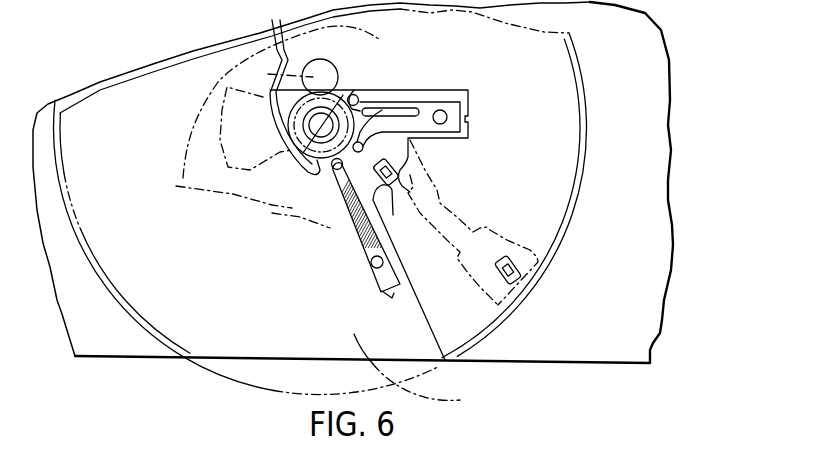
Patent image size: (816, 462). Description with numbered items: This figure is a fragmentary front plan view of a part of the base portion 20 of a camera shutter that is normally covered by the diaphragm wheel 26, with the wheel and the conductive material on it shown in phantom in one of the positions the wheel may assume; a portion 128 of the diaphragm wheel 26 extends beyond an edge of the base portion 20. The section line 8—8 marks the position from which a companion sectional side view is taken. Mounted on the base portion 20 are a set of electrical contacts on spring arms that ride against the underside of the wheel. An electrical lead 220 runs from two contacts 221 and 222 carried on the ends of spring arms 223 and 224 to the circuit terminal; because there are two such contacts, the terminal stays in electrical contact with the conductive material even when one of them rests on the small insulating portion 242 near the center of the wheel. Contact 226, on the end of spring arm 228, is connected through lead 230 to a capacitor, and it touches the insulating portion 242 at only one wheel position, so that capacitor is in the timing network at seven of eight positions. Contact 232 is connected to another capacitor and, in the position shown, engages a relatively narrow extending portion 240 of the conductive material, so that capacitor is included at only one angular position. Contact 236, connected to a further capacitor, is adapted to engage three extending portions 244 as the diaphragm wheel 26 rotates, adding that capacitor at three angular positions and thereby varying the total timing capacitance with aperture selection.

The section line 8— 8 is at (369, 0).
The base portion 20 is at (563, 340).
The diaphragm wheel 26 is at (419, 372).
The portion of diaphragm wheel 128 is at (297, 378).
The electrical lead 220 is at (466, 119).
The contact 221 is at (358, 96).
The contact 222 is at (395, 148).
The spring arm 223 is at (413, 98).
The spring arm 224 is at (409, 138).
The contact 226 is at (334, 170).
The spring arm 228 is at (350, 212).
The lead 230 is at (393, 293).
The contact 232 is at (521, 268).
The contact 236 is at (409, 259).
The extending portion 240 is at (492, 248).
The insulating portion 242 is at (201, 88).
The extending portions 244 is at (193, 162).